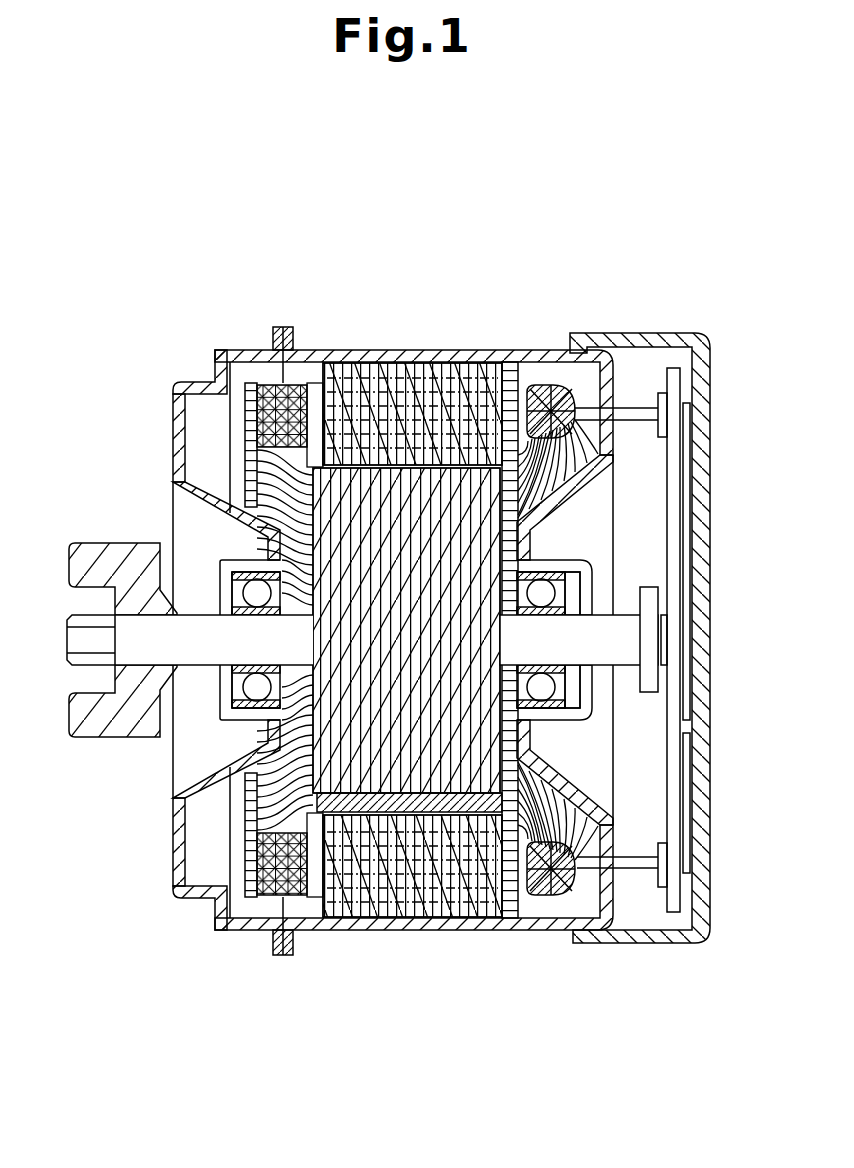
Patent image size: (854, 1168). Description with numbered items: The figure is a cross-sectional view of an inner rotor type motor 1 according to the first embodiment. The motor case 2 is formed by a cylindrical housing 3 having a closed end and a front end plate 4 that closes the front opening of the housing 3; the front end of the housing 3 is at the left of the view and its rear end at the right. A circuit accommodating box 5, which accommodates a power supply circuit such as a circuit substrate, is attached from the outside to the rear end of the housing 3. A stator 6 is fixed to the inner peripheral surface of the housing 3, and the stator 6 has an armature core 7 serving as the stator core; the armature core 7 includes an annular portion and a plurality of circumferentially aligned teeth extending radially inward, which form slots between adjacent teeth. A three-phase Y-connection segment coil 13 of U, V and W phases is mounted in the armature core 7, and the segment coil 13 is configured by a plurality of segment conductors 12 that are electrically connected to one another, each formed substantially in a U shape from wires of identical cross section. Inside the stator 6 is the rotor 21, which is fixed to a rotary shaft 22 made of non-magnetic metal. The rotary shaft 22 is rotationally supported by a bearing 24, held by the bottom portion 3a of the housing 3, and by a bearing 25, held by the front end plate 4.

The inner rotor type motor 1 is at (467, 245).
The motor case 2 is at (337, 952).
The housing 3 is at (315, 931).
The bottom portion 3a is at (592, 716).
The front end plate 4 is at (252, 928).
The circuit accommodating box 5 is at (708, 378).
The stator 6 is at (387, 362).
The armature core 7 is at (482, 370).
The segment conductors 12 is at (415, 420).
The segment coil 13 is at (550, 375).
The rotor 21 is at (353, 463).
The rotary shaft 22 is at (193, 612).
The bearing 24 is at (556, 562).
The bearing 25 is at (224, 708).